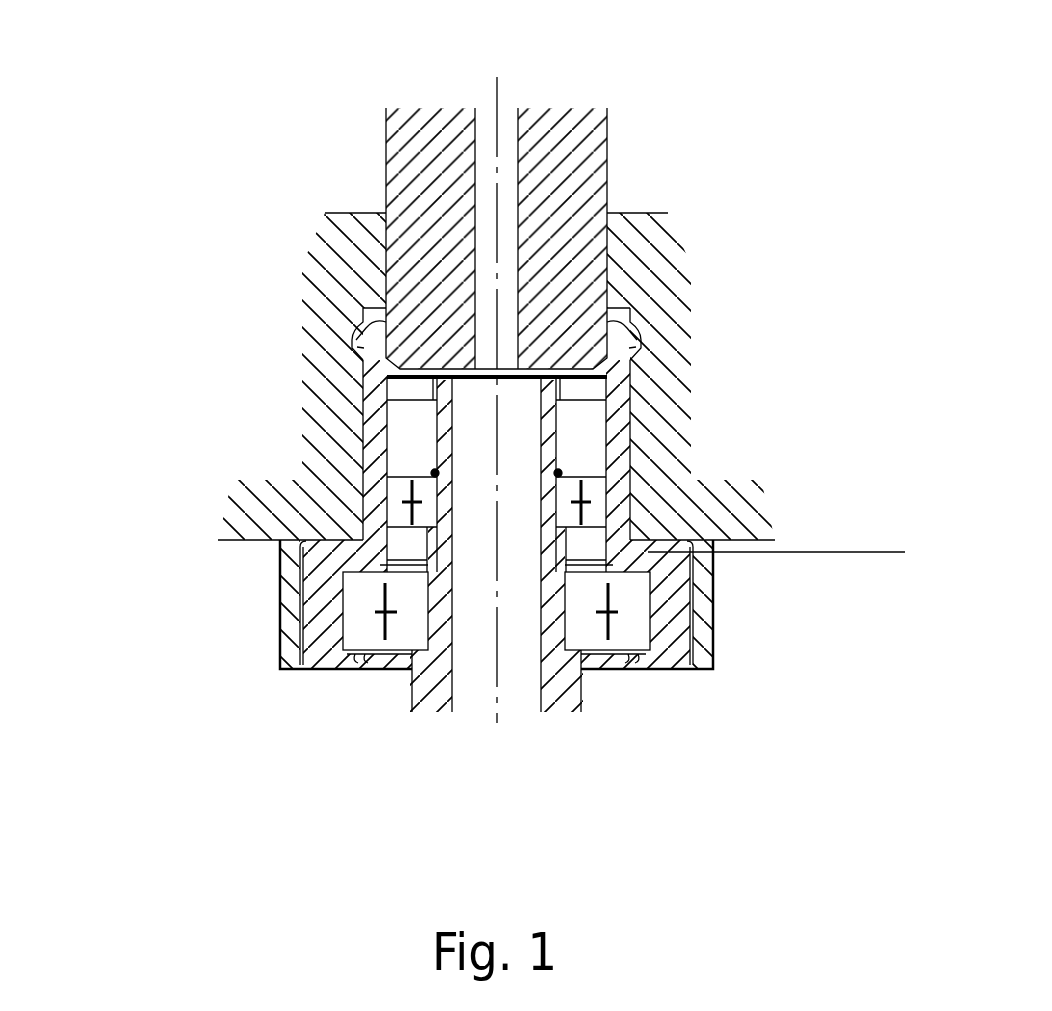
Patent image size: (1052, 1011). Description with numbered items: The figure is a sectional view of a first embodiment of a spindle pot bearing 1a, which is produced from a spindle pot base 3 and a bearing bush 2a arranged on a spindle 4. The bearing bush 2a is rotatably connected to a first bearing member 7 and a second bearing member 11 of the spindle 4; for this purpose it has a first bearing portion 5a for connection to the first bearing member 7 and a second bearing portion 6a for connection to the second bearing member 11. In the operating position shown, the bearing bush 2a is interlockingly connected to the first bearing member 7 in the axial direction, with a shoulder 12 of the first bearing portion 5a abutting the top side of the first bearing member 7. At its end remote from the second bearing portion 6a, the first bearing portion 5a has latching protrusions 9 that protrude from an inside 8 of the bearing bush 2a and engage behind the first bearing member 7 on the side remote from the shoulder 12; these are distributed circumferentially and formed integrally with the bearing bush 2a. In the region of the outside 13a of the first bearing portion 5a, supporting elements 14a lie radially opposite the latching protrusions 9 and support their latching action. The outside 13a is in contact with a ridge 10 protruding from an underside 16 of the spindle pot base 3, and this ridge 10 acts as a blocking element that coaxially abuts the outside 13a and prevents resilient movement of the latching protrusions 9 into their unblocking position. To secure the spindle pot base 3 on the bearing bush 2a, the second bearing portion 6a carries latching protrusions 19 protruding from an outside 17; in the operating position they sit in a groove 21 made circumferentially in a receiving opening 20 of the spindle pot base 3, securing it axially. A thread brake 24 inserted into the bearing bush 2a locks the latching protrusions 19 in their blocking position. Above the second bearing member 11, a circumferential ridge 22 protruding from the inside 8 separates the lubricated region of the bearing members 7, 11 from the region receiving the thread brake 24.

The spindle pot bearing 1a is at (815, 110).
The bearing bush 2a is at (636, 502).
The spindle pot base 3 is at (745, 505).
The spindle 4 is at (555, 690).
The first bearing portion 5a is at (710, 590).
The second bearing portion 6a is at (665, 402).
The first bearing member 7 is at (627, 625).
The inside 8 is at (363, 598).
The latching protrusions 9 is at (637, 668).
The ridge 10 is at (708, 613).
The second bearing member 11 is at (400, 493).
The shoulder 12 is at (794, 552).
The outside 13a is at (302, 595).
The supporting elements 14a is at (713, 662).
The underside 16 is at (297, 545).
The outside 17 is at (632, 378).
The latching protrusions 19 is at (355, 345).
The receiving opening 20 is at (363, 538).
The groove 21 is at (632, 338).
The circumferential ridge 22 is at (407, 395).
The thread brake 24 is at (563, 158).